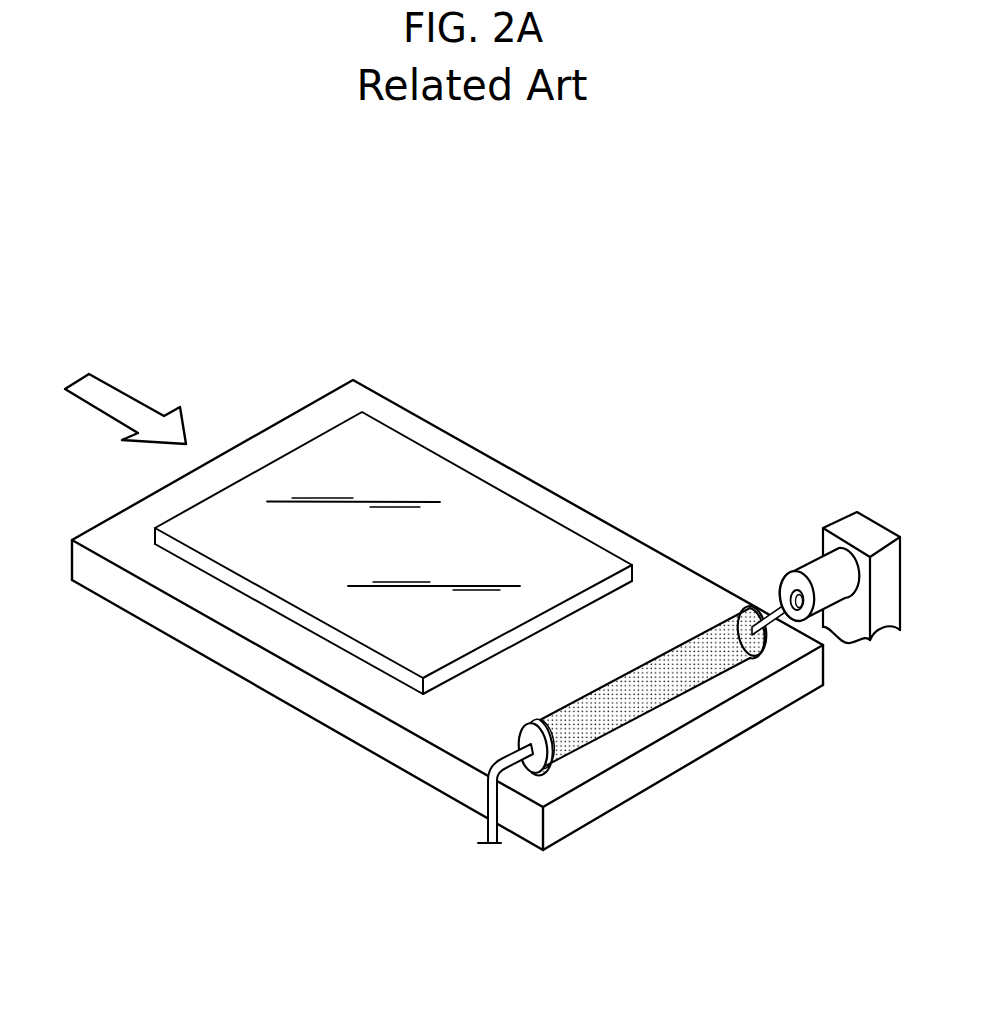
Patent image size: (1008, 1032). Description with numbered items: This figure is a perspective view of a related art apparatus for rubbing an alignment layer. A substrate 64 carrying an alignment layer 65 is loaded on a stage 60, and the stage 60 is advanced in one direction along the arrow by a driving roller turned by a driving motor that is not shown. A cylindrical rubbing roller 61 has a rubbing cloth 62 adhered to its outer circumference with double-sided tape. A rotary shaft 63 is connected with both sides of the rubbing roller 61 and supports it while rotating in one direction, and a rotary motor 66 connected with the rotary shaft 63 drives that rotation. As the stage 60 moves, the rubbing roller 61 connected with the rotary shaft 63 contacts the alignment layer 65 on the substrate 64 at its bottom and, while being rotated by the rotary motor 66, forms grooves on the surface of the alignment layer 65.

The stage 60 is at (355, 397).
The rubbing roller 61 is at (760, 633).
The rubbing cloth 62 is at (698, 672).
The rotary shaft 63 is at (773, 612).
The substrate 64 is at (225, 575).
The alignment layer 65 is at (425, 460).
The rotary motor 66 is at (812, 573).